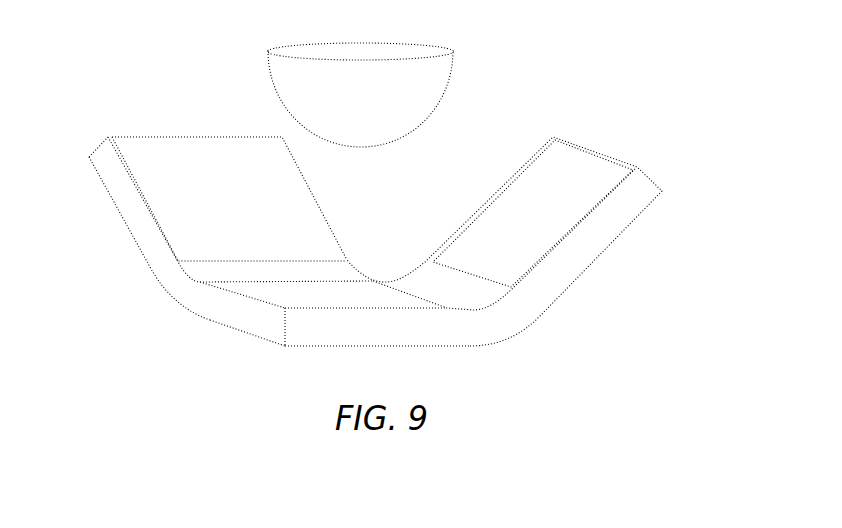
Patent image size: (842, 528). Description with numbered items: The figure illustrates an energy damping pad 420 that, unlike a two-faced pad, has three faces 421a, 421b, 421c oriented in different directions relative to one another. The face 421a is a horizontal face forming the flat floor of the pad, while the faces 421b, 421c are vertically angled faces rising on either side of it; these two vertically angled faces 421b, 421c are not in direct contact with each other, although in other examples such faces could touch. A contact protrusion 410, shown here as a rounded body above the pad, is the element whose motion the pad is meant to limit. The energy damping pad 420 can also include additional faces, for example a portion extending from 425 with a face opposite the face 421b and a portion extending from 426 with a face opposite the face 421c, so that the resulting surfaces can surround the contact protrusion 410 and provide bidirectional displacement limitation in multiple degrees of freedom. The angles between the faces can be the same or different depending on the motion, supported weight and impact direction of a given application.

The contact protrusion 410 is at (442, 97).
The energy damping pad 420 is at (152, 100).
The face 421a is at (352, 306).
The face 421b is at (553, 223).
The face 421c is at (255, 209).
The portion 425 is at (248, 318).
The portion 426 is at (381, 332).